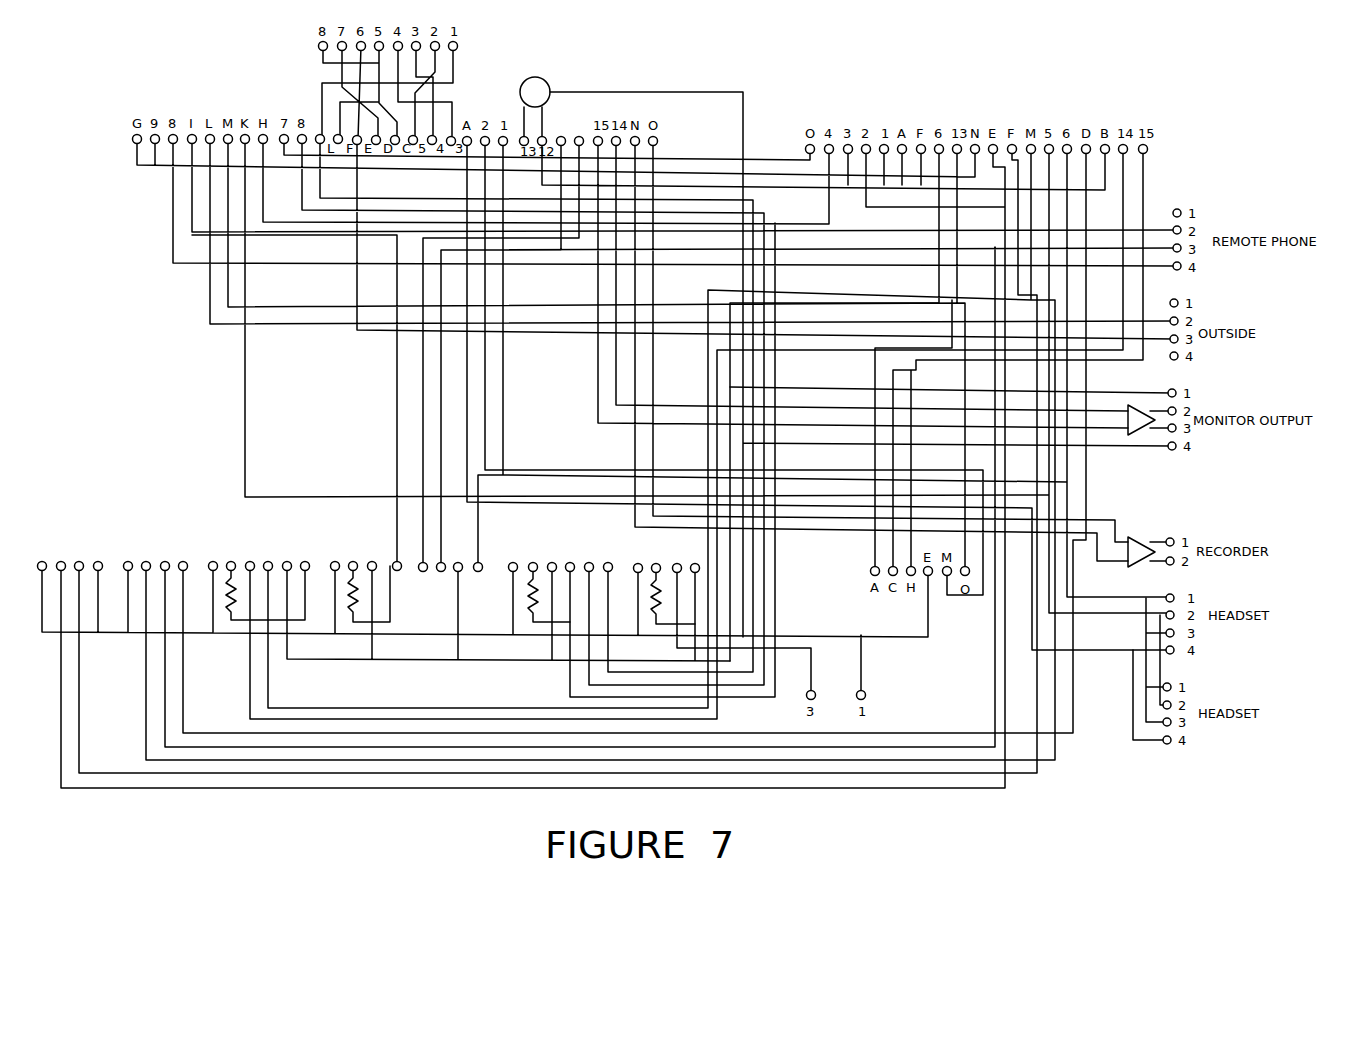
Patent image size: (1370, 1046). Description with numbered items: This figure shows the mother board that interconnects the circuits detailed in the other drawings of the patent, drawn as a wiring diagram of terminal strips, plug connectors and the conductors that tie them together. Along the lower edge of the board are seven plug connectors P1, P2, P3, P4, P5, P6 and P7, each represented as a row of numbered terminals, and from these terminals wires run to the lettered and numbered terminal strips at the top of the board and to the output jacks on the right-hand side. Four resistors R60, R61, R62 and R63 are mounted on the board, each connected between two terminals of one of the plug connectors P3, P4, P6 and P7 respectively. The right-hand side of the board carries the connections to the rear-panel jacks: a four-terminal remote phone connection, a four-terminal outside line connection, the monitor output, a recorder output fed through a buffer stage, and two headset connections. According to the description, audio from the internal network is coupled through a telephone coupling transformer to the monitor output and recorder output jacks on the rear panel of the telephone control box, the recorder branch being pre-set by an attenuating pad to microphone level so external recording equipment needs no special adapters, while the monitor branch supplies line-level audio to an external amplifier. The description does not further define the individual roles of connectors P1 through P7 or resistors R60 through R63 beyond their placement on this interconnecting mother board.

The resistor R60 is at (261, 603).
The resistor R61 is at (363, 603).
The resistor R62 is at (544, 604).
The resistor R63 is at (667, 604).
The plug connector P1 is at (69, 538).
The plug connector P2 is at (155, 538).
The plug connector P3 is at (259, 538).
The plug connector P4 is at (366, 538).
The plug connector P5 is at (451, 549).
The plug connector P6 is at (561, 539).
The plug connector P7 is at (667, 551).